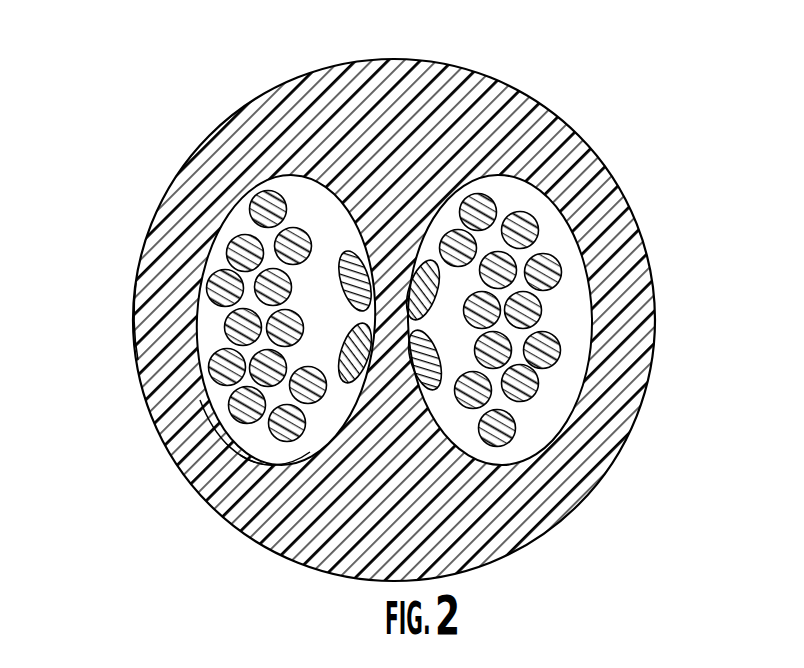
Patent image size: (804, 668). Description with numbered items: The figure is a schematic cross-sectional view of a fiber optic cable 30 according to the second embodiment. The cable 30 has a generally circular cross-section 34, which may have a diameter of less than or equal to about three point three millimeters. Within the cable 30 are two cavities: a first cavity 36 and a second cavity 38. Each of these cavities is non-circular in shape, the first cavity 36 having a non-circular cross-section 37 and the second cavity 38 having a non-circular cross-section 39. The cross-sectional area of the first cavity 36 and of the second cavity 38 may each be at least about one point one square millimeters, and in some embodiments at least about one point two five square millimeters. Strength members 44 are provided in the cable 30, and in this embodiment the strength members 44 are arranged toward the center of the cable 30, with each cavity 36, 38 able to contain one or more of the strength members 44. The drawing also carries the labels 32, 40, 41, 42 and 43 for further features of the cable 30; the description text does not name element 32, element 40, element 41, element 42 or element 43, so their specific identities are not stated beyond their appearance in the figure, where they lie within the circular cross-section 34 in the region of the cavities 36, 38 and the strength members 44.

The fiber optic cable 30 is at (590, 137).
The cable jacket 32 is at (216, 183).
The generally circular cross-section 34 is at (136, 283).
The first cavity 36 is at (533, 420).
The non-circular cross-section 37 is at (603, 268).
The second cavity 38 is at (272, 477).
The non-circular cross-section 39 is at (245, 445).
The optical fiber 40 is at (556, 309).
The optical fiber 41 is at (546, 352).
The first cavity 42 is at (323, 240).
The first optical fiber unit 43 is at (213, 323).
The strength members 44 is at (366, 250).